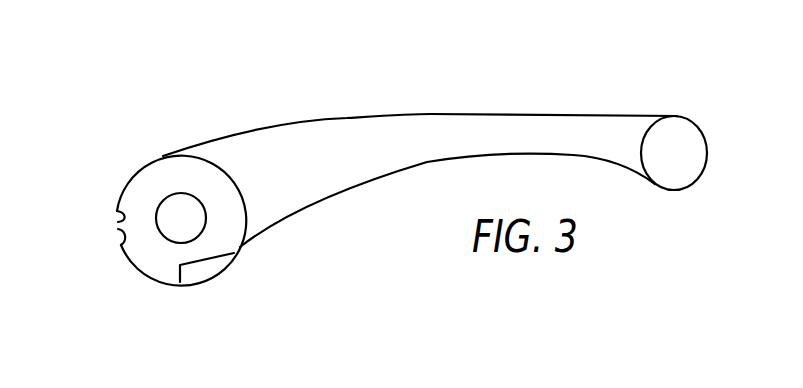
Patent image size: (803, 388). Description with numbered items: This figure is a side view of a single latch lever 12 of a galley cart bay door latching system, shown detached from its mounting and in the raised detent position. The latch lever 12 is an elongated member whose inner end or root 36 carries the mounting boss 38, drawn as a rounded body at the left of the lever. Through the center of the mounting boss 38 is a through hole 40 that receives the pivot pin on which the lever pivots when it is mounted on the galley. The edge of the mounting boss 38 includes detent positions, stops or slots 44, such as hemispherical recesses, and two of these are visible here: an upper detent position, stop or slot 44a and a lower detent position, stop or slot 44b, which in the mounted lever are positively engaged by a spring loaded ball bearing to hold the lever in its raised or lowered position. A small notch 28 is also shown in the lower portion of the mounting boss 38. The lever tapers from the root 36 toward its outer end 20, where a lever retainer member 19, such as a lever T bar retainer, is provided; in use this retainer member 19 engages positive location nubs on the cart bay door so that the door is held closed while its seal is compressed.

The latch lever 12 is at (345, 118).
The lever retainer member 19 is at (707, 153).
The outer end 20 is at (639, 88).
The notch 28 is at (207, 278).
The root 36 is at (192, 124).
The mounting boss 38 is at (163, 260).
The through hole 40 is at (181, 217).
The detent positions, stops or slots 44 is at (98, 229).
The upper detent position, stop or slot 44a is at (113, 216).
The lower detent position, stop or slot 44b is at (118, 237).